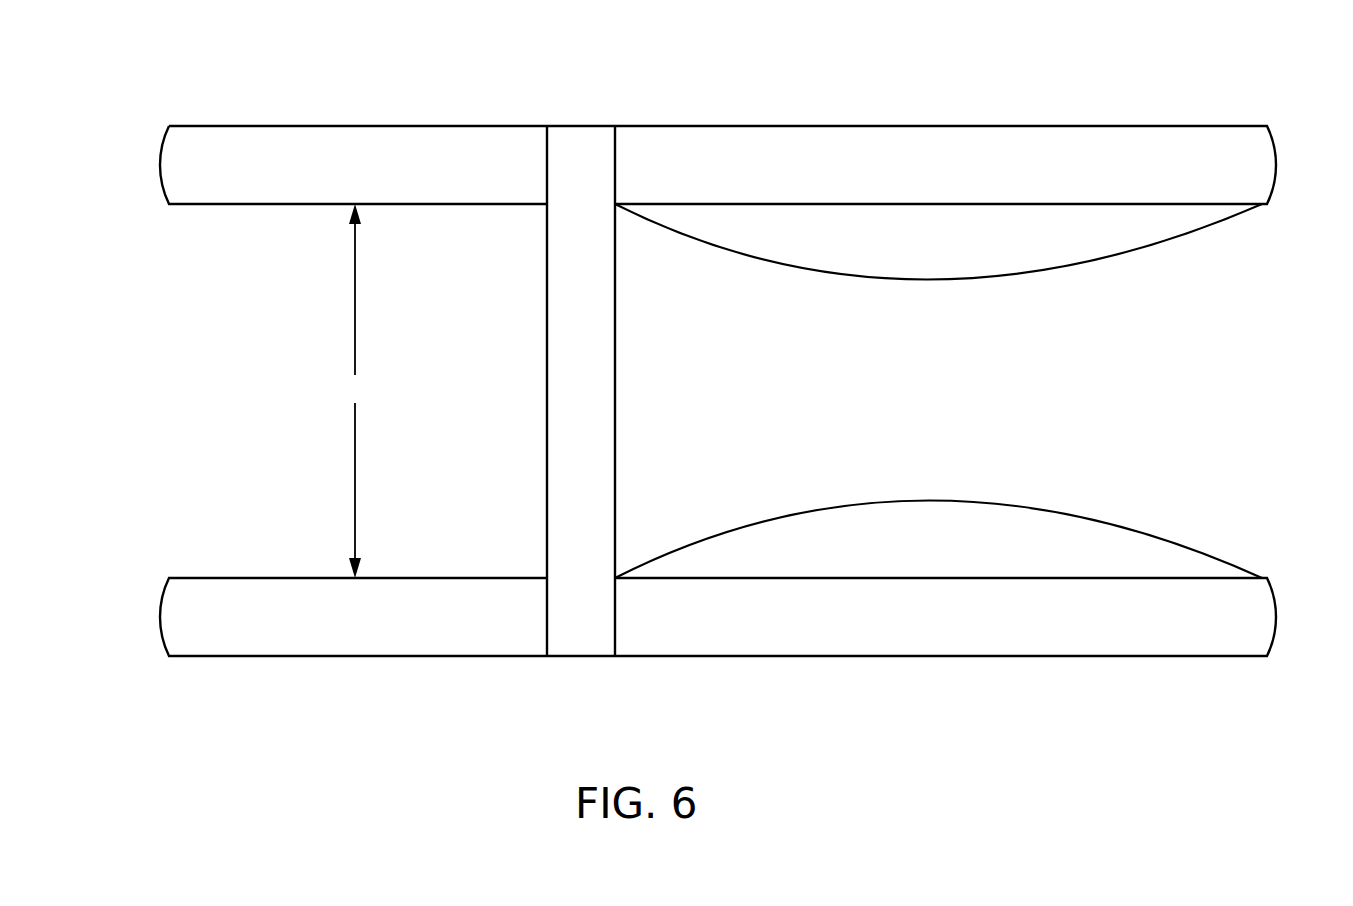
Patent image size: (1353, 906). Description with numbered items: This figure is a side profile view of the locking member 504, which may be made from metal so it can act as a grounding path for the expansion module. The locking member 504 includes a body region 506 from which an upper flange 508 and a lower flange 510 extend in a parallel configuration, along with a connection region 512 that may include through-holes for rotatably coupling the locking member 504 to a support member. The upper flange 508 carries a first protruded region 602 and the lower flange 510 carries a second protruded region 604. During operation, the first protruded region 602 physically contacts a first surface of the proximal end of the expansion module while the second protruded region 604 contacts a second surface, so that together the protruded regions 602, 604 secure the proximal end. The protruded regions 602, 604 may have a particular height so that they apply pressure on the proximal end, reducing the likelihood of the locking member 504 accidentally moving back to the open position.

The locking member 504 is at (228, 43).
The body region 506 is at (580, 126).
The upper flange 508 is at (860, 126).
The lower flange 510 is at (905, 657).
The connection region 512 is at (351, 391).
The first protruded region 602 is at (838, 272).
The second protruded region 604 is at (846, 507).